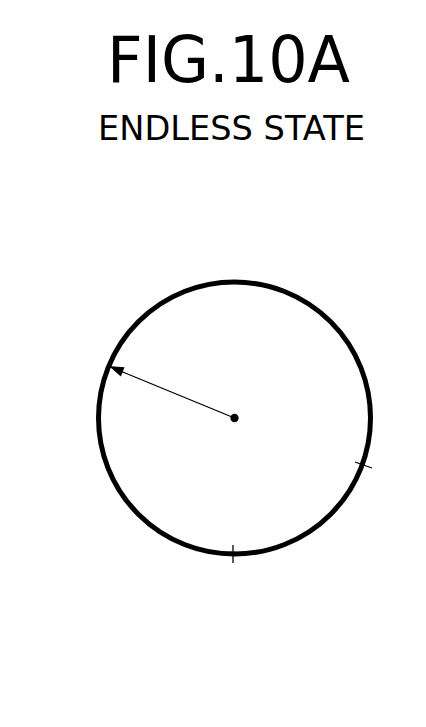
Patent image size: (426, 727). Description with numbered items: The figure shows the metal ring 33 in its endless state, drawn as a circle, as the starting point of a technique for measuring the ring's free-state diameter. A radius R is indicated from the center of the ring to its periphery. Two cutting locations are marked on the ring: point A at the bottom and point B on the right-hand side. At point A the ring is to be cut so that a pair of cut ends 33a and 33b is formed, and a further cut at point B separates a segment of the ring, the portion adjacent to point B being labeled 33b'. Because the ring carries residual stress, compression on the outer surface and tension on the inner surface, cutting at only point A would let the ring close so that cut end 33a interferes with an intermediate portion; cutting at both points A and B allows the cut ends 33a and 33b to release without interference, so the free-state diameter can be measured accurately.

The metal ring 33 is at (302, 287).
The cut end 33a is at (233, 553).
The cut end 33b is at (272, 513).
The other end of belt (displaced position) 33b' is at (296, 410).
The radius R is at (174, 389).
The point A is at (232, 577).
The point B is at (380, 475).